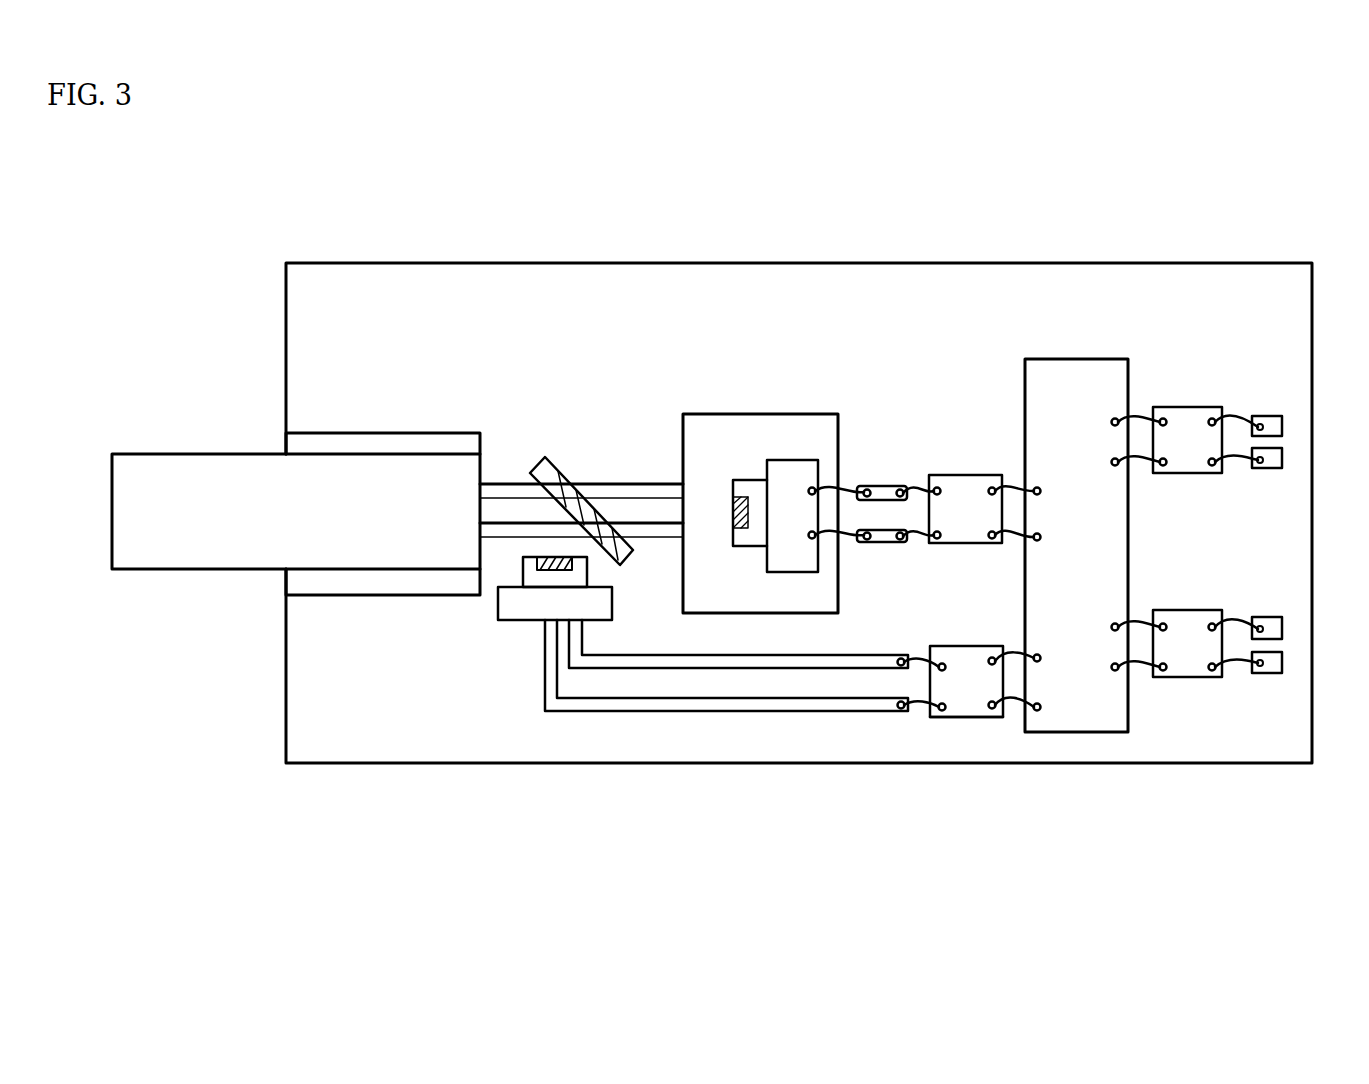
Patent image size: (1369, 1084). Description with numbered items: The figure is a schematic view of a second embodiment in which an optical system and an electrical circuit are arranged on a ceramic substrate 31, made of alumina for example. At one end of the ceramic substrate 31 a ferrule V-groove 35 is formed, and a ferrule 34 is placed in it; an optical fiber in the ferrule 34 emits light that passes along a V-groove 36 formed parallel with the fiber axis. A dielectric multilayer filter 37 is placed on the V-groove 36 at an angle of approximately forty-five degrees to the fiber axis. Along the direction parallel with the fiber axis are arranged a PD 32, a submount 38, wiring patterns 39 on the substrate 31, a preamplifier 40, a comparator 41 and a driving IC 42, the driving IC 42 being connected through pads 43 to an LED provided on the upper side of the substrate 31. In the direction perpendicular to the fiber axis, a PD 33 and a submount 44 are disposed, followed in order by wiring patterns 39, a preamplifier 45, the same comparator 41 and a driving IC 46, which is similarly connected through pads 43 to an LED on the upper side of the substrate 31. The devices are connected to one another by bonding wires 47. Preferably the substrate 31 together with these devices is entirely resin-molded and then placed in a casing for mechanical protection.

The ceramic substrate 31 is at (422, 700).
The PD 32 is at (752, 480).
The PD 33 is at (530, 577).
The ferrule 34 is at (240, 454).
The ferrule V-groove 35 is at (387, 447).
The V-groove 36 is at (638, 484).
The dielectric multilayer filter 37 is at (560, 480).
The submount 38 is at (795, 460).
The wiring patterns 39 is at (885, 486).
The preamplifier 40 is at (972, 475).
The comparator 41 is at (1101, 359).
The driving IC 42 is at (1195, 407).
The pads 43 is at (1272, 416).
The submount 44 is at (597, 600).
The preamplifier 45 is at (967, 718).
The driving IC 46 is at (1192, 677).
The bonding wires 47 is at (913, 705).